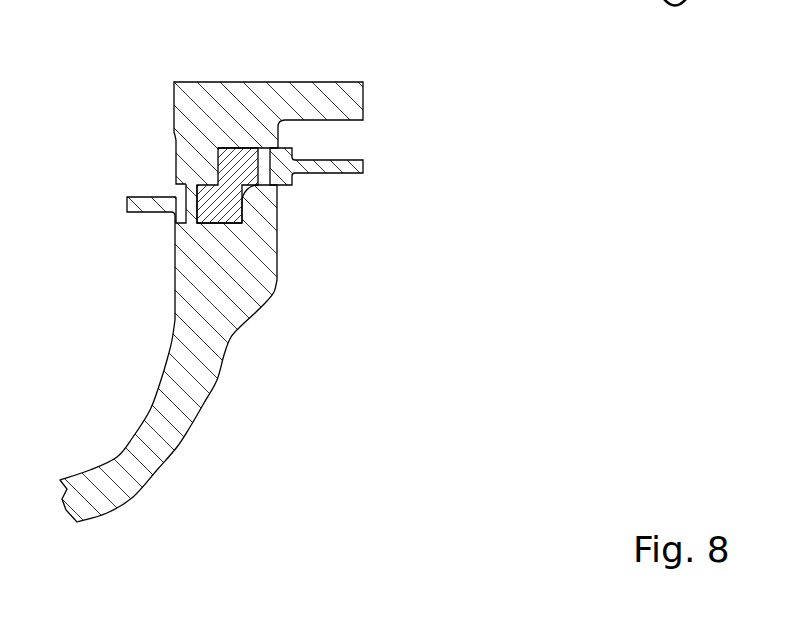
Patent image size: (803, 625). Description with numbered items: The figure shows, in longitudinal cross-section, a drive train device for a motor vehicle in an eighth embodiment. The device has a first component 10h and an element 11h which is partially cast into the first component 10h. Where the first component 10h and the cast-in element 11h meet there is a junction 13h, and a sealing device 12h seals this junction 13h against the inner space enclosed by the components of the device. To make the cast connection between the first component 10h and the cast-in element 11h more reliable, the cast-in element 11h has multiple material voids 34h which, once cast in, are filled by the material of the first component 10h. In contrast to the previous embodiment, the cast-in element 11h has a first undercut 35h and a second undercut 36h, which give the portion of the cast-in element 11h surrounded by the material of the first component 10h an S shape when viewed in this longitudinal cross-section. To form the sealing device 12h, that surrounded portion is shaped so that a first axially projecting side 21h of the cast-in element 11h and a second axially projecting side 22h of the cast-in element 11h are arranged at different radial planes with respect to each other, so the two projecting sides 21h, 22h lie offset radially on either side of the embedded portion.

The first component 10h is at (362, 86).
The material voids 34h is at (173, 155).
The first undercut 35h is at (217, 148).
The first axially projecting side 21h is at (366, 159).
The cast-in element 11h is at (363, 172).
The junction 13h is at (280, 193).
The second undercut 36h is at (279, 246).
The sealing device 12h is at (191, 228).
The second axially projecting side 22h is at (128, 214).